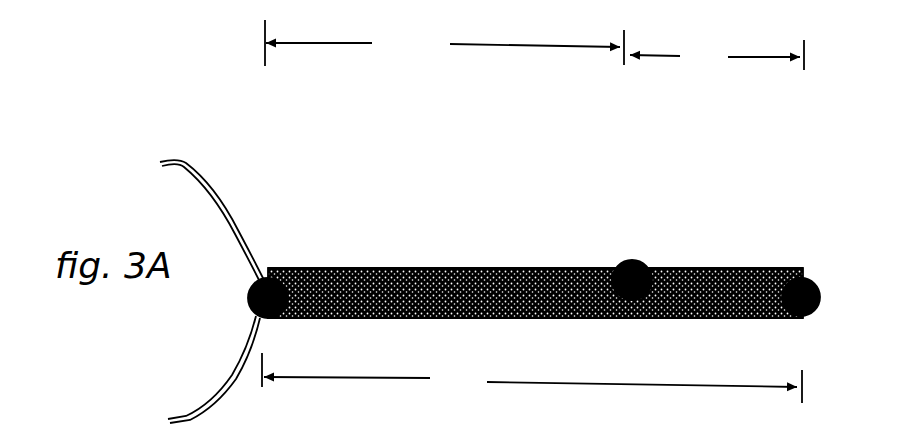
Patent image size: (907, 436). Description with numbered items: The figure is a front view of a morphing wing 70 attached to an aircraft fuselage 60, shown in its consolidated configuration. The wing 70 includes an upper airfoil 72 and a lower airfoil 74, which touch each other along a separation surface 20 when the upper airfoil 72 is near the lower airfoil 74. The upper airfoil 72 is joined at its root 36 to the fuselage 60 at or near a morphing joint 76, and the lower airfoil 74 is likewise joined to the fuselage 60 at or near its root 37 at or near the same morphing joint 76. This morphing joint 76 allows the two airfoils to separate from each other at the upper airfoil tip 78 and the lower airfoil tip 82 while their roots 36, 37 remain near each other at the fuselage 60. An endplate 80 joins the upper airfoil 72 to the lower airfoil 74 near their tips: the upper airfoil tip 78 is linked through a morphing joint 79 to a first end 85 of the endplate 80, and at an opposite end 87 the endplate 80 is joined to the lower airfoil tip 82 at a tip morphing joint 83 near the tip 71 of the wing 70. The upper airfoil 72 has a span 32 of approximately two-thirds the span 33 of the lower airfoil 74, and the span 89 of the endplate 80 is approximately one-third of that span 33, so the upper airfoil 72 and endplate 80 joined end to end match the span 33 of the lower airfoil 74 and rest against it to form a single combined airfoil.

The separation surface 20 is at (588, 319).
The span of the upper airfoil 32 is at (444, 43).
The span of the lower airfoil 33 is at (532, 378).
The root of the upper airfoil 36 is at (262, 150).
The root of the lower airfoil 37 is at (263, 407).
The aircraft fuselage 60 is at (170, 160).
The morphing wing 70 is at (480, 146).
The tip of the wing 71 is at (805, 156).
The upper airfoil 72 is at (495, 263).
The lower airfoil 74 is at (525, 320).
The morphing joint 76 is at (263, 268).
The upper airfoil tip 78 is at (627, 224).
The morphing joint 79 is at (632, 260).
The endplate 80 is at (705, 267).
The lower airfoil tip 82 is at (798, 328).
The tip morphing joint 83 is at (823, 290).
The first end of the endplate 85 is at (648, 269).
The opposite end of the endplate 87 is at (797, 272).
The span of the endplate 89 is at (717, 56).